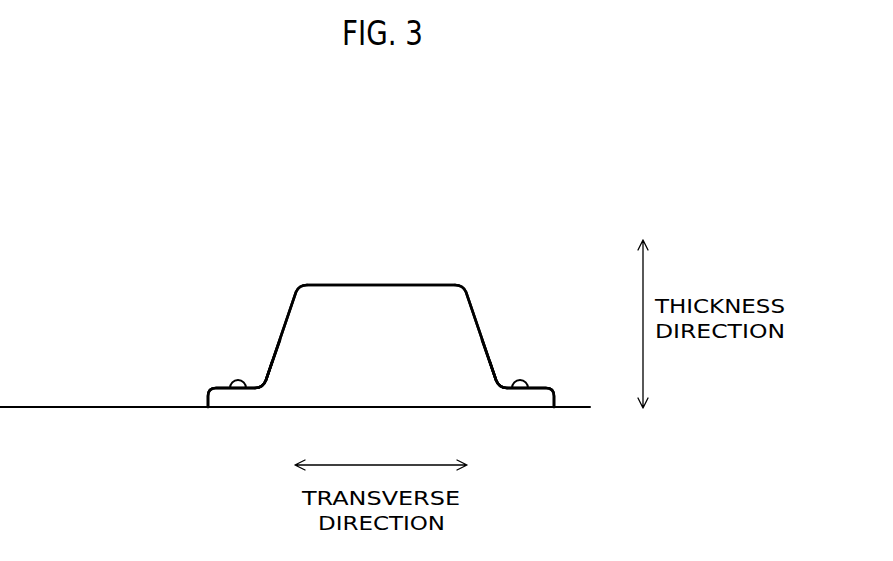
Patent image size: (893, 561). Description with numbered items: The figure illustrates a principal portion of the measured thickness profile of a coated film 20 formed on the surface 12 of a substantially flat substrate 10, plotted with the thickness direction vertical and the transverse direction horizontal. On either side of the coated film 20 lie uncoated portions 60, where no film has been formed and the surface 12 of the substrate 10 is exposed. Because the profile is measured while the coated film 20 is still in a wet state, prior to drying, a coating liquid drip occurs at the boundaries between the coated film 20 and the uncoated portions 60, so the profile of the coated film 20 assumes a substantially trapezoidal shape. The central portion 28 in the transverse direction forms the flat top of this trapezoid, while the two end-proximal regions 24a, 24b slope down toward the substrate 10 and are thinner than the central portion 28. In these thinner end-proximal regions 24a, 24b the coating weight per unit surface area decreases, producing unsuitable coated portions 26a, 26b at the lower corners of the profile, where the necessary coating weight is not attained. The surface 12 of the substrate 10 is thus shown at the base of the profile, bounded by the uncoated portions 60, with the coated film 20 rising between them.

The substrate 10 is at (222, 387).
The surface 12 is at (232, 389).
The coated film 20 is at (423, 284).
The end-proximal region 24a is at (273, 350).
The end-proximal region 24b is at (490, 349).
The unsuitable coated portion 26a is at (270, 370).
The unsuitable coated portion 26b is at (493, 370).
The central portion 28 is at (353, 284).
The uncoated portion 60 is at (222, 347).